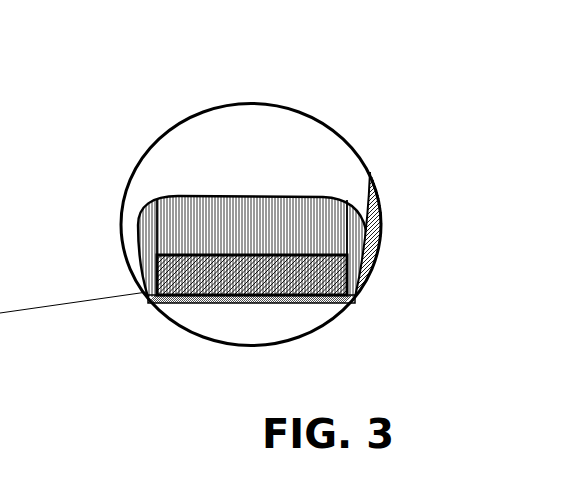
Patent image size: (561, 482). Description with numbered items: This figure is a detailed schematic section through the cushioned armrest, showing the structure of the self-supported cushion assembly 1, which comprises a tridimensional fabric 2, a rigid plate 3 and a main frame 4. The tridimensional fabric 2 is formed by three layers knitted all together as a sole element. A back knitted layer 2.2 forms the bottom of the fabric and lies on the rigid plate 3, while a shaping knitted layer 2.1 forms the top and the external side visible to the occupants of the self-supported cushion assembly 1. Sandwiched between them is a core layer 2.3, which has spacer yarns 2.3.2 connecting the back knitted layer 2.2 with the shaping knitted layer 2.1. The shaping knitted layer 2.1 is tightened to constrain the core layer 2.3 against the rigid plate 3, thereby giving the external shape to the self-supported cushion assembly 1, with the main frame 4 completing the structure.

The self-supported cushion assembly 1 is at (313, 94).
The tridimensional fabric 2 is at (225, 195).
The shaping knitted layer 2.1 is at (139, 221).
The back knitted layer 2.2 is at (347, 254).
The core layer 2.3 is at (148, 233).
The spacer yarns 2.3.2 is at (177, 214).
The rigid plate 3 is at (188, 300).
The main frame 4 is at (263, 303).